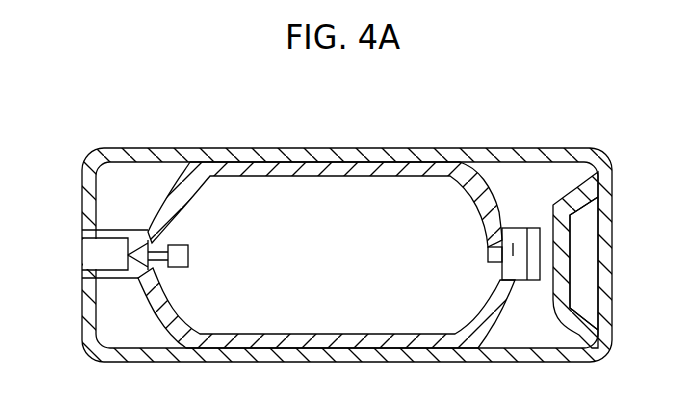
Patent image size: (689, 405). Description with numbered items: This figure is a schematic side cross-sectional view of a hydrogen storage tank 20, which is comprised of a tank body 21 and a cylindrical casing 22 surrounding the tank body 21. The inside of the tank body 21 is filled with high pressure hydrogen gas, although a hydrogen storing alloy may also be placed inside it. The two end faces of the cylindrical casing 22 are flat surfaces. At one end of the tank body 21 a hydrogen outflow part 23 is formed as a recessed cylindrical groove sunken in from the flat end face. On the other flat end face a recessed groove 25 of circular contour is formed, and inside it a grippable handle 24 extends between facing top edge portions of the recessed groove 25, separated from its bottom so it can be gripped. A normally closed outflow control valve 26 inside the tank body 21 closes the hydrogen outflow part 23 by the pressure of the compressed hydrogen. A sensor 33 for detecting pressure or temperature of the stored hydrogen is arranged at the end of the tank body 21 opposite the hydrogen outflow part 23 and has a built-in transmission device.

The hydrogen storage tank 20 is at (397, 138).
The tank body 21 is at (514, 240).
The cylindrical casing 22 is at (237, 168).
The hydrogen outflow part 23 is at (97, 272).
The handle 24 is at (602, 238).
The recessed groove 25 is at (560, 278).
The outflow control valve 26 is at (190, 256).
The sensor 33 is at (512, 230).